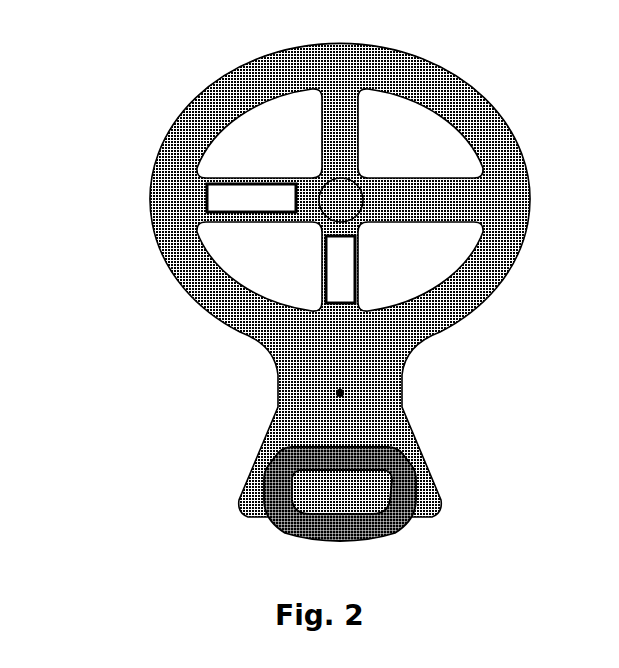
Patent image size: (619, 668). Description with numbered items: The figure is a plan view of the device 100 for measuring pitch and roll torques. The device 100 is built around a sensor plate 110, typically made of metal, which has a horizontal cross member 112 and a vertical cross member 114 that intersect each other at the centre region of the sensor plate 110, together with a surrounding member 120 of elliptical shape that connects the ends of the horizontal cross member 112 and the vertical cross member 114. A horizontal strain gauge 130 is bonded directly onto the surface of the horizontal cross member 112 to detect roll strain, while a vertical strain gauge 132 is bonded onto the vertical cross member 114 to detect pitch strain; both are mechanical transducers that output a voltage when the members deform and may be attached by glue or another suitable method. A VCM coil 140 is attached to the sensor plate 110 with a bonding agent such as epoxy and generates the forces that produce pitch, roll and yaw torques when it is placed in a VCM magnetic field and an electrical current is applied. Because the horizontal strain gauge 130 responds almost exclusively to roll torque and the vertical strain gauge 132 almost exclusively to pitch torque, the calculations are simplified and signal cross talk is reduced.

The device for measuring pitch and roll torques 100 is at (313, 290).
The sensor plate 110 is at (372, 205).
The horizontal cross member 112 is at (420, 192).
The vertical cross member 114 is at (330, 143).
The surrounding member 120 is at (473, 120).
The horizontal strain gauge 130 is at (247, 205).
The vertical strain gauge 132 is at (347, 280).
The VCM coil 140 is at (400, 517).